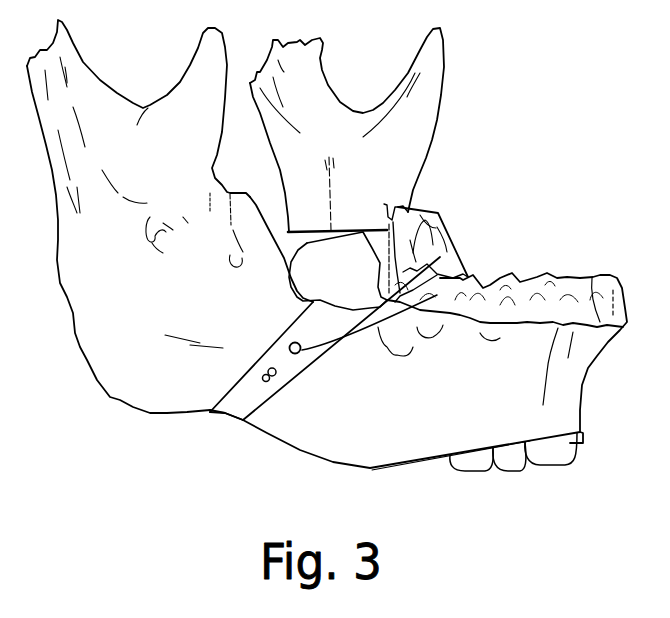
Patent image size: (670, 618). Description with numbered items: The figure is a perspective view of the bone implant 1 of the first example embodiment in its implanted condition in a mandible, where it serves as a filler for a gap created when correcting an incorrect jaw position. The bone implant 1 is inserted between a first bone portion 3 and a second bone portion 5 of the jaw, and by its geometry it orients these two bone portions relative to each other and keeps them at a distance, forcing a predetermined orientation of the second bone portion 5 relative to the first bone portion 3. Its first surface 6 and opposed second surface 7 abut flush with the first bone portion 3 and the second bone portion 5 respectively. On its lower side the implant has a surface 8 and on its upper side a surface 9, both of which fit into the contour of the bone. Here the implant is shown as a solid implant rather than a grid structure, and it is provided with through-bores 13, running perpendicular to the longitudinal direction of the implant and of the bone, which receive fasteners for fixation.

The bone implant 1 is at (230, 449).
The first bone portion 3 is at (224, 348).
The second bone portion 5 is at (282, 389).
The first surface 6 is at (234, 376).
The second surface 7 is at (311, 382).
The surface on lower side 8 is at (214, 430).
The surface on upper side 9 is at (325, 320).
The through-bore 13 is at (440, 257).